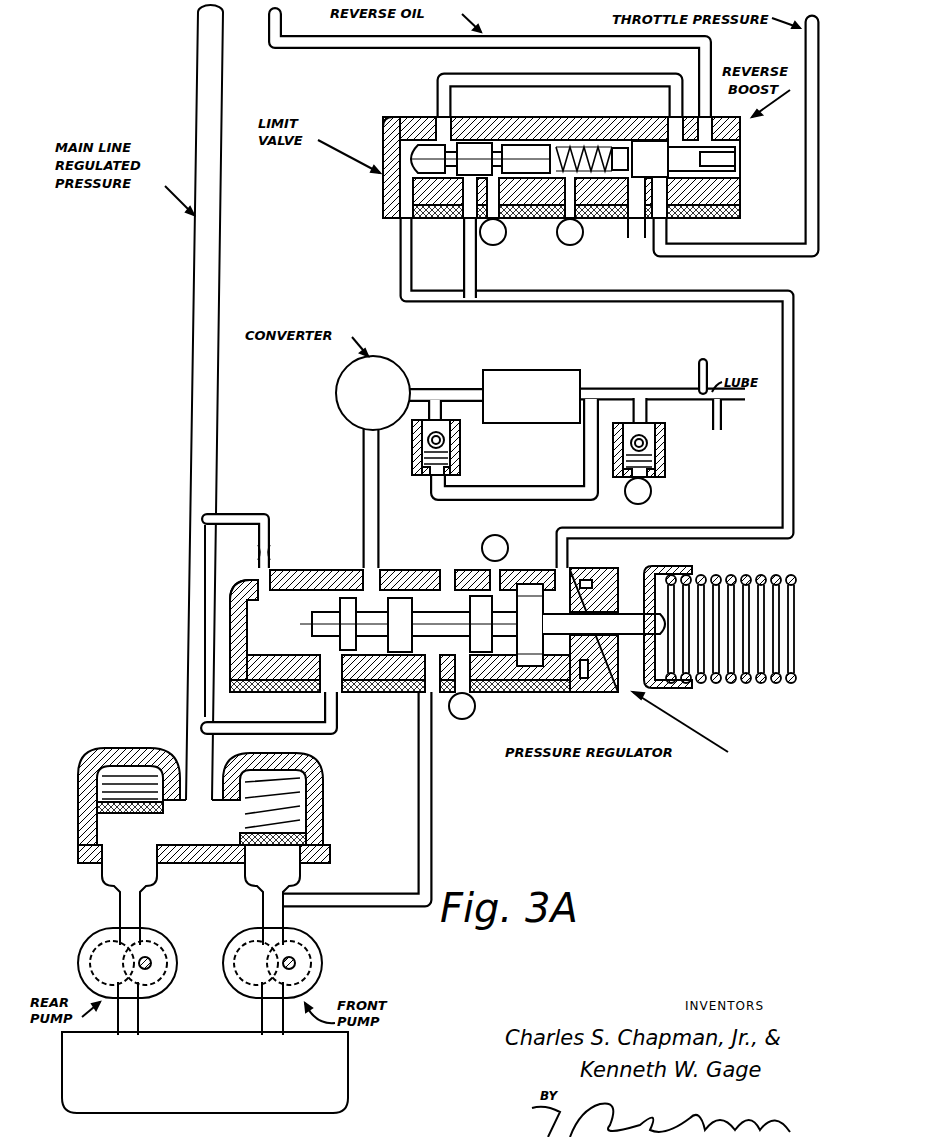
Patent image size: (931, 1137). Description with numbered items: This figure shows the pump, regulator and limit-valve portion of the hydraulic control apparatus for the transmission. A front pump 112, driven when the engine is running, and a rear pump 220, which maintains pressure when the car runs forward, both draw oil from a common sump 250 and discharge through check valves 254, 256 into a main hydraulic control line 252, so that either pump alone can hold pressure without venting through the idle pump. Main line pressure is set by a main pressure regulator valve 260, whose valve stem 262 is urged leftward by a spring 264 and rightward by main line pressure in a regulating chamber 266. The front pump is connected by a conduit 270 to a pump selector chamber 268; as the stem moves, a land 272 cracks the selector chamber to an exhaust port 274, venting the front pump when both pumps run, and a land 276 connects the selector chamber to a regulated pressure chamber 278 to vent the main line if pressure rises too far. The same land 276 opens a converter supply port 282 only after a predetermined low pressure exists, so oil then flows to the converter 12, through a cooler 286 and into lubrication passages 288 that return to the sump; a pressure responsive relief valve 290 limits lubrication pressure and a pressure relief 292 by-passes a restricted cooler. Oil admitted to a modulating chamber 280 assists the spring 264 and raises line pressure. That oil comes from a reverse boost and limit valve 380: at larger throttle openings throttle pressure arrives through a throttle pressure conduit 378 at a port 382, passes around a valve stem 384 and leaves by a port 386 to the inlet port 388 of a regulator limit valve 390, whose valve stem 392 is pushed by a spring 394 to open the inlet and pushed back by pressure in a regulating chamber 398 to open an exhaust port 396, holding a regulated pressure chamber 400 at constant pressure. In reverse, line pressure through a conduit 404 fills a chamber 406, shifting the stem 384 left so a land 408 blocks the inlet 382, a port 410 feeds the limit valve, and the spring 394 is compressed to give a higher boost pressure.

The torque converter 12 is at (366, 414).
The front pump 112 is at (306, 955).
The rear pump 220 is at (85, 970).
The sump 250 is at (325, 1078).
The main hydraulic control line 252 is at (190, 717).
The check valve 254 is at (300, 830).
The check valve 256 is at (140, 814).
The main pressure regulator valve 260 is at (447, 629).
The valve stem 262 is at (462, 592).
The spring 264 is at (745, 684).
The regulating chamber 266 is at (286, 592).
The pump selector chamber 268 is at (421, 692).
The conduit 270 is at (434, 790).
The land 272 is at (520, 584).
The exhaust port 274 is at (476, 698).
The land 276 is at (400, 596).
The regulated pressure chamber 278 is at (340, 690).
The modulating chamber 280 is at (562, 582).
The converter supply port 282 is at (370, 576).
The cooler 286 is at (540, 413).
The lubrication passages 288 is at (709, 366).
The pressure responsive relief valve 290 is at (666, 455).
The pressure relief 292 is at (461, 440).
The throttle pressure conduit 378 is at (806, 66).
The reverse boost and limit valve 380 is at (563, 166).
The port 382 is at (665, 246).
The valve stem 384 is at (648, 218).
The port 386 is at (666, 116).
The inlet port 388 is at (440, 116).
The regulator limit valve 390 is at (406, 116).
The valve stem 392 is at (420, 206).
The spring 394 is at (586, 145).
The exhaust port 396 is at (478, 253).
The regulating chamber 398 is at (392, 192).
The regulated pressure chamber 400 is at (474, 141).
The conduit 404 is at (530, 43).
The chamber 406 is at (718, 133).
The land 408 is at (700, 163).
The port 410 is at (700, 116).